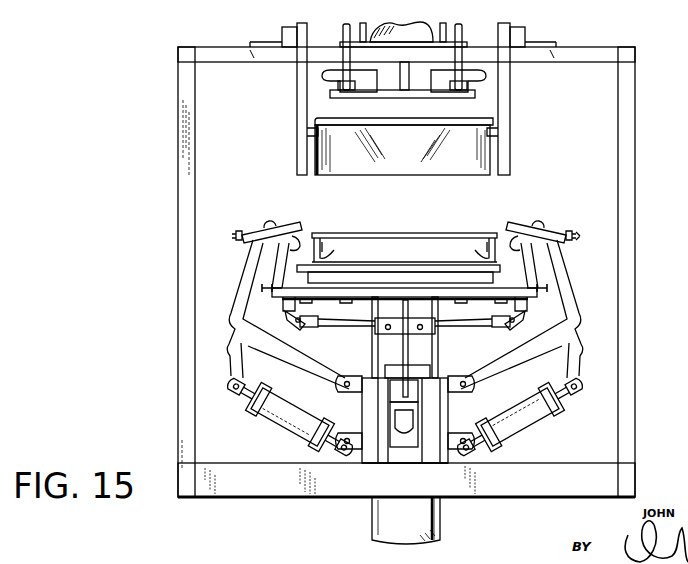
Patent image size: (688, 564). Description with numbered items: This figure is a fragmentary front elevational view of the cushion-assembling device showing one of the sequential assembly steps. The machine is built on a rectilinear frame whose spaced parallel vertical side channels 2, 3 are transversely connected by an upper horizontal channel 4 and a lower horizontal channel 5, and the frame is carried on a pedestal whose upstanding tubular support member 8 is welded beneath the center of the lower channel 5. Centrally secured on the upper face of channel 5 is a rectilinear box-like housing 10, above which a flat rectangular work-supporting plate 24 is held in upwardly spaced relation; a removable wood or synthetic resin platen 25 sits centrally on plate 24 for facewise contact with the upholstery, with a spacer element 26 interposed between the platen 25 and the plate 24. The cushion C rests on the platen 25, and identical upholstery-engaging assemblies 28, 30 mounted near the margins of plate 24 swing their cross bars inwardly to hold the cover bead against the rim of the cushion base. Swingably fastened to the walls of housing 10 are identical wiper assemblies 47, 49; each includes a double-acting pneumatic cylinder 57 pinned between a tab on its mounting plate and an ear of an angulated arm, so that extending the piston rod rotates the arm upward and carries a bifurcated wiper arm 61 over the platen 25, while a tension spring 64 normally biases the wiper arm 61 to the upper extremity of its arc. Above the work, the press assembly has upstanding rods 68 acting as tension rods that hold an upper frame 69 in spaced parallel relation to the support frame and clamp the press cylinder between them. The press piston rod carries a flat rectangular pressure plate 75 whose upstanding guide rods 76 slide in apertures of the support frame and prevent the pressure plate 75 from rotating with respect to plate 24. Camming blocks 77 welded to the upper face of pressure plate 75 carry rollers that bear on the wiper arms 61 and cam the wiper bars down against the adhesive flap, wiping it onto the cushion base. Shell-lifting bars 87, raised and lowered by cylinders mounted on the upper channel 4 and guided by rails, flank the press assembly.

The vertical side channel 2 is at (176, 145).
The vertical side channel 3 is at (636, 145).
The upper horizontal channel 4 is at (231, 48).
The lower horizontal channel 5 is at (556, 471).
The tubular support member 8 is at (441, 521).
The box-like housing 10 is at (385, 462).
The work-supporting plate 24 is at (412, 287).
The platen 25 is at (356, 262).
The spacer element 26 is at (450, 266).
The upholstery-engaging assembly 28 is at (522, 333).
The upholstery-engaging assembly 30 is at (280, 305).
The wiper assembly 47 is at (571, 353).
The wiper assembly 49 is at (233, 353).
The double-acting pneumatic cylinder 57 is at (276, 428).
The bifurcated wiper arm 61 is at (516, 224).
The tension spring 64 is at (247, 249).
The upstanding rods 68 is at (362, 25).
The upper frame 69 is at (402, 40).
The pressure plate 75 is at (356, 97).
The guide rods 76 is at (462, 26).
The camming blocks 77 is at (446, 84).
The shell-lifting bar 87 is at (288, 160).
The cushion C is at (389, 249).